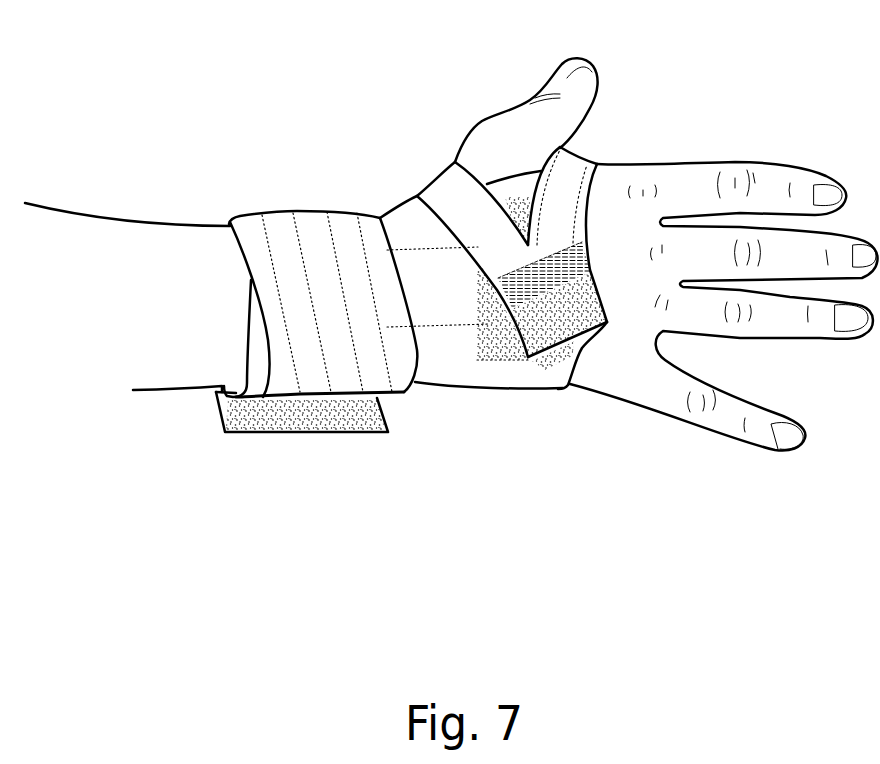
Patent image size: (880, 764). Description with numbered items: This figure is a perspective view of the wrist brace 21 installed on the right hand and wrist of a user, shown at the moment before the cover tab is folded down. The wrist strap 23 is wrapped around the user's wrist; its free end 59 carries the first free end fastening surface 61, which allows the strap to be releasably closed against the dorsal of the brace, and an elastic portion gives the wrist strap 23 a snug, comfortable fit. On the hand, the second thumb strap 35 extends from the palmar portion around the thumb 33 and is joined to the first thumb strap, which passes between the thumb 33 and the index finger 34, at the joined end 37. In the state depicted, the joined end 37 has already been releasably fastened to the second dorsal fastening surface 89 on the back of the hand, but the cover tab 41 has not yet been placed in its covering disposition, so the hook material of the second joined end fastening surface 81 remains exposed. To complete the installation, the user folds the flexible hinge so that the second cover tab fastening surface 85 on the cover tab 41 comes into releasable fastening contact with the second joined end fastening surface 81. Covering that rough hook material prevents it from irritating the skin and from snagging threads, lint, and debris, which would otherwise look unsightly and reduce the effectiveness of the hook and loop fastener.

The wrist brace 21 is at (355, 178).
The wrist strap 23 is at (234, 250).
The thumb 33 is at (597, 90).
The index finger 34 is at (563, 173).
The second thumb strap 35 is at (450, 195).
The joined end 37 is at (590, 250).
The cover tab 41 is at (600, 333).
The free end 59 is at (302, 460).
The first free end fastening surface 61 is at (252, 420).
The second joined end fastening surface 81 is at (490, 292).
The second cover tab fastening surface 85 is at (597, 318).
The second dorsal fastening surface 89 is at (492, 363).